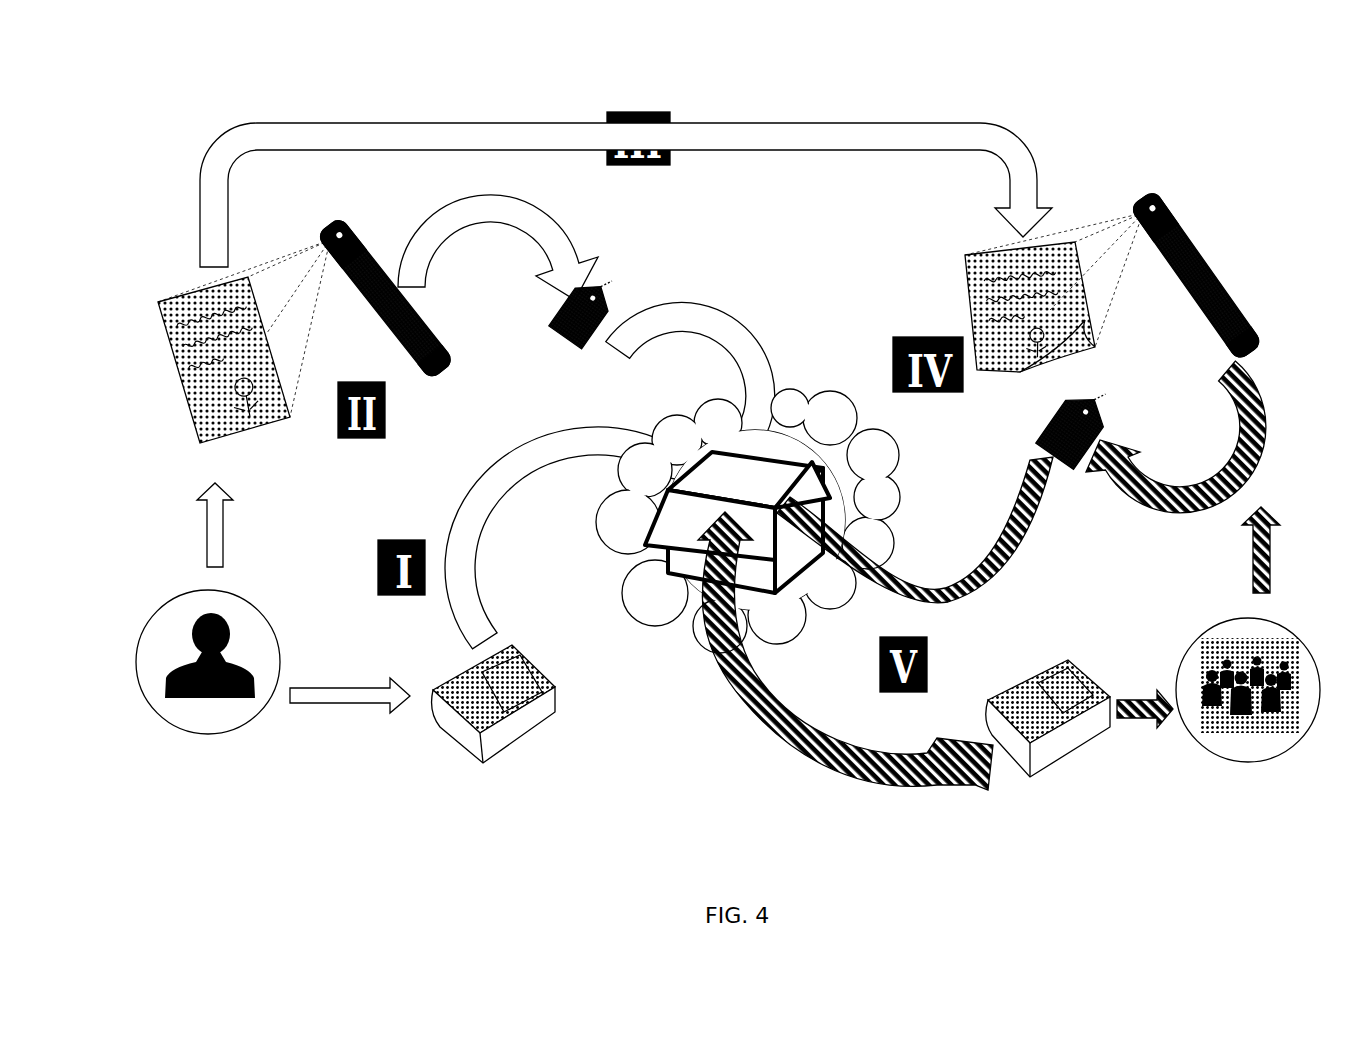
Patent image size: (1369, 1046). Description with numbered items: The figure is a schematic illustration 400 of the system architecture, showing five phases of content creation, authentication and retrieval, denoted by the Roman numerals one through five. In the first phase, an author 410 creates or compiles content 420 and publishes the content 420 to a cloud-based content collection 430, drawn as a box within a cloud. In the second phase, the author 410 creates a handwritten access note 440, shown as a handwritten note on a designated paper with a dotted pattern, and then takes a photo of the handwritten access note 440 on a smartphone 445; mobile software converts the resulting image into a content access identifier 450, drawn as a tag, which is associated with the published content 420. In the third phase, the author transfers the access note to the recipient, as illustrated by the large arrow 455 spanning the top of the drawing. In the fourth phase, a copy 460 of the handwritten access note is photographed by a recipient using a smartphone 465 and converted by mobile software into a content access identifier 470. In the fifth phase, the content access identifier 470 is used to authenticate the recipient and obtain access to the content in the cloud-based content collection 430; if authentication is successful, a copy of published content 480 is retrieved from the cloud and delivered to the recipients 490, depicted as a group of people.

The schematic illustration 400 is at (1236, 160).
The author 410 is at (183, 733).
The content 420 is at (437, 737).
The cloud-based content collection 430 is at (665, 558).
The handwritten access note 440 is at (178, 387).
The smartphone 445 is at (326, 232).
The content access identifier 450 is at (568, 338).
The arrow 455 is at (735, 155).
The copy of the handwritten access note 460 is at (963, 307).
The smartphone 465 is at (1218, 270).
The content access identifier 470 is at (1055, 418).
The copy of published content 480 is at (1052, 772).
The recipients 490 is at (1250, 765).